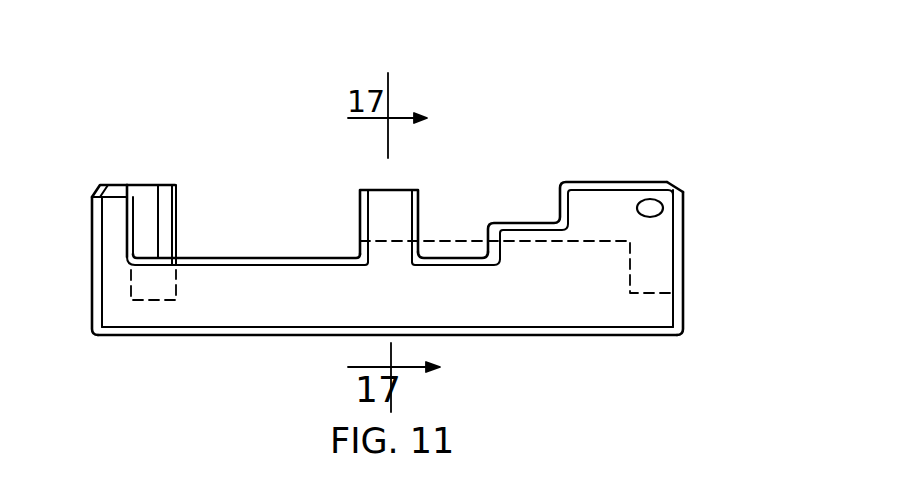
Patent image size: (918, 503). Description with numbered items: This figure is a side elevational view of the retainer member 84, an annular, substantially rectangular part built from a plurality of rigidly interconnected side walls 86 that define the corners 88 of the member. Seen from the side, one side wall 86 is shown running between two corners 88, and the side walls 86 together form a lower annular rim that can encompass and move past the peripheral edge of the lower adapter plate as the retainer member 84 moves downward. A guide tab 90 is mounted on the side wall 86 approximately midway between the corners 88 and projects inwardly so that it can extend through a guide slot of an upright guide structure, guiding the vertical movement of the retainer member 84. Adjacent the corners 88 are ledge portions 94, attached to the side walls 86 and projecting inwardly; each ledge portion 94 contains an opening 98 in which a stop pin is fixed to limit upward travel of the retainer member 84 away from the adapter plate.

The retainer member 84 is at (393, 228).
The side walls 86 is at (280, 270).
The corners 88 is at (92, 267).
The guide tabs 90 is at (162, 182).
The ledge portions 94 is at (602, 203).
The openings 98 is at (663, 207).